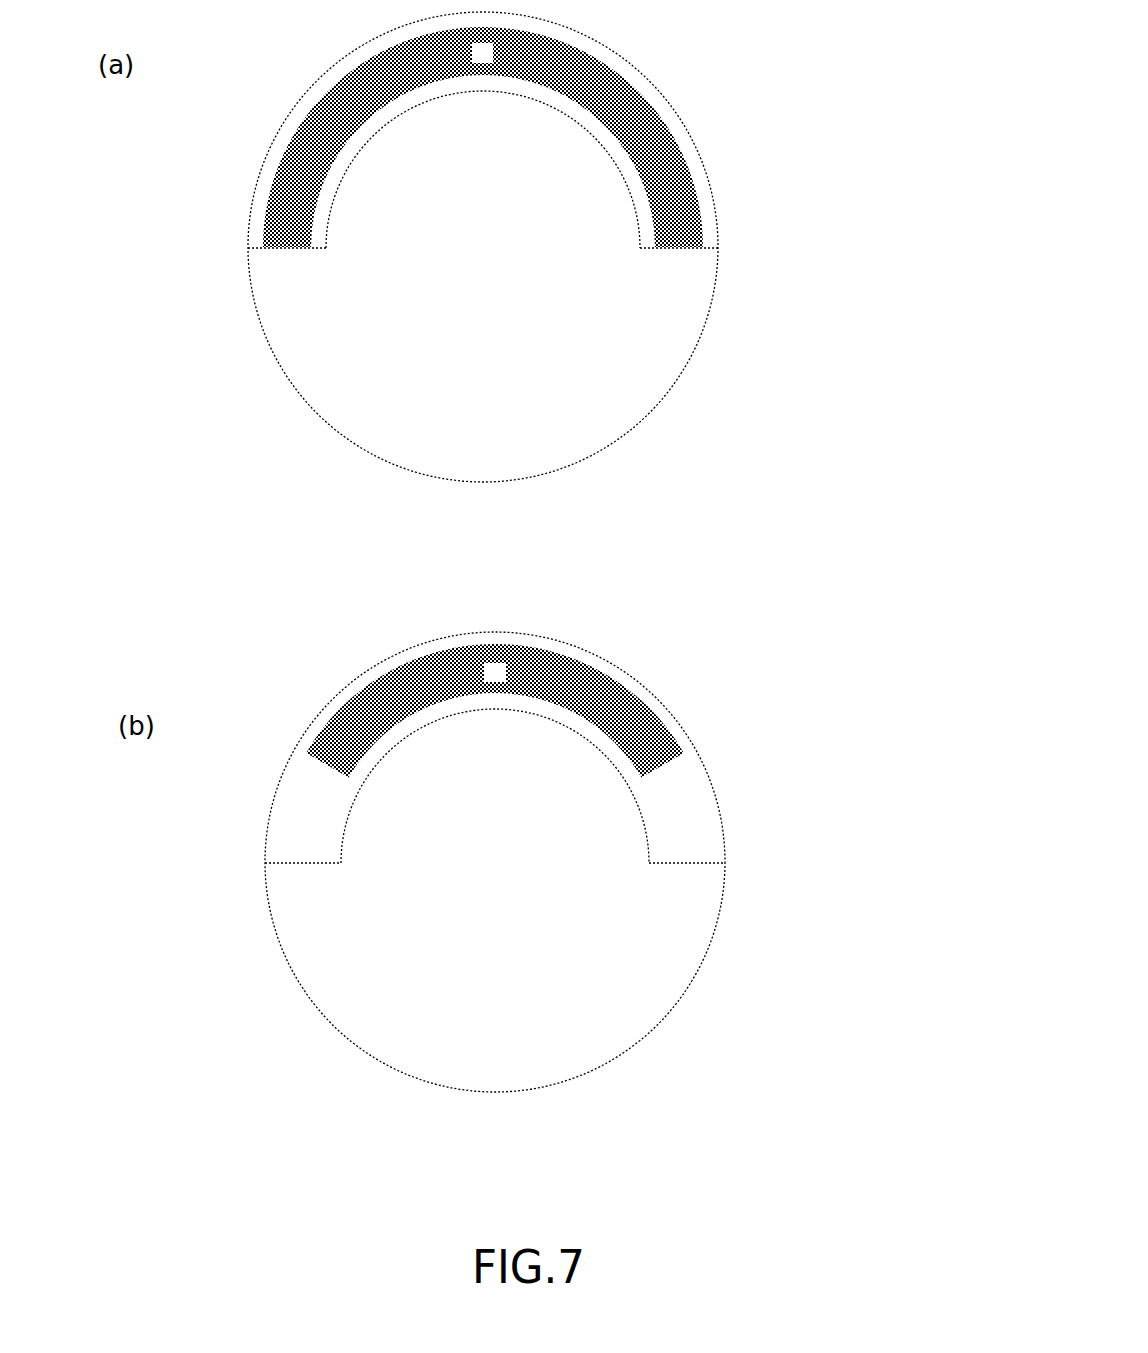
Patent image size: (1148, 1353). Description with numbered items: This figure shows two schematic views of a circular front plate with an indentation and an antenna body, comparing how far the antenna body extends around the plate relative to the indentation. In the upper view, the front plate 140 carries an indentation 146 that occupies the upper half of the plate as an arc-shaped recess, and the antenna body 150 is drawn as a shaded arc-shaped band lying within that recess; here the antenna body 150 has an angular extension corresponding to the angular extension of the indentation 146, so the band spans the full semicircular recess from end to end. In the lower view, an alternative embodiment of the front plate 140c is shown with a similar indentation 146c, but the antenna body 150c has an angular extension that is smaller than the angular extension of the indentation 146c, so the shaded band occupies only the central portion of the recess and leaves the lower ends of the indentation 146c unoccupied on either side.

The front plate 140 is at (668, 393).
The indentation 146 is at (709, 212).
The antenna body 150 is at (633, 93).
The front plate 140c is at (688, 988).
The indentation 146c is at (683, 826).
The antenna body 150c is at (633, 700).